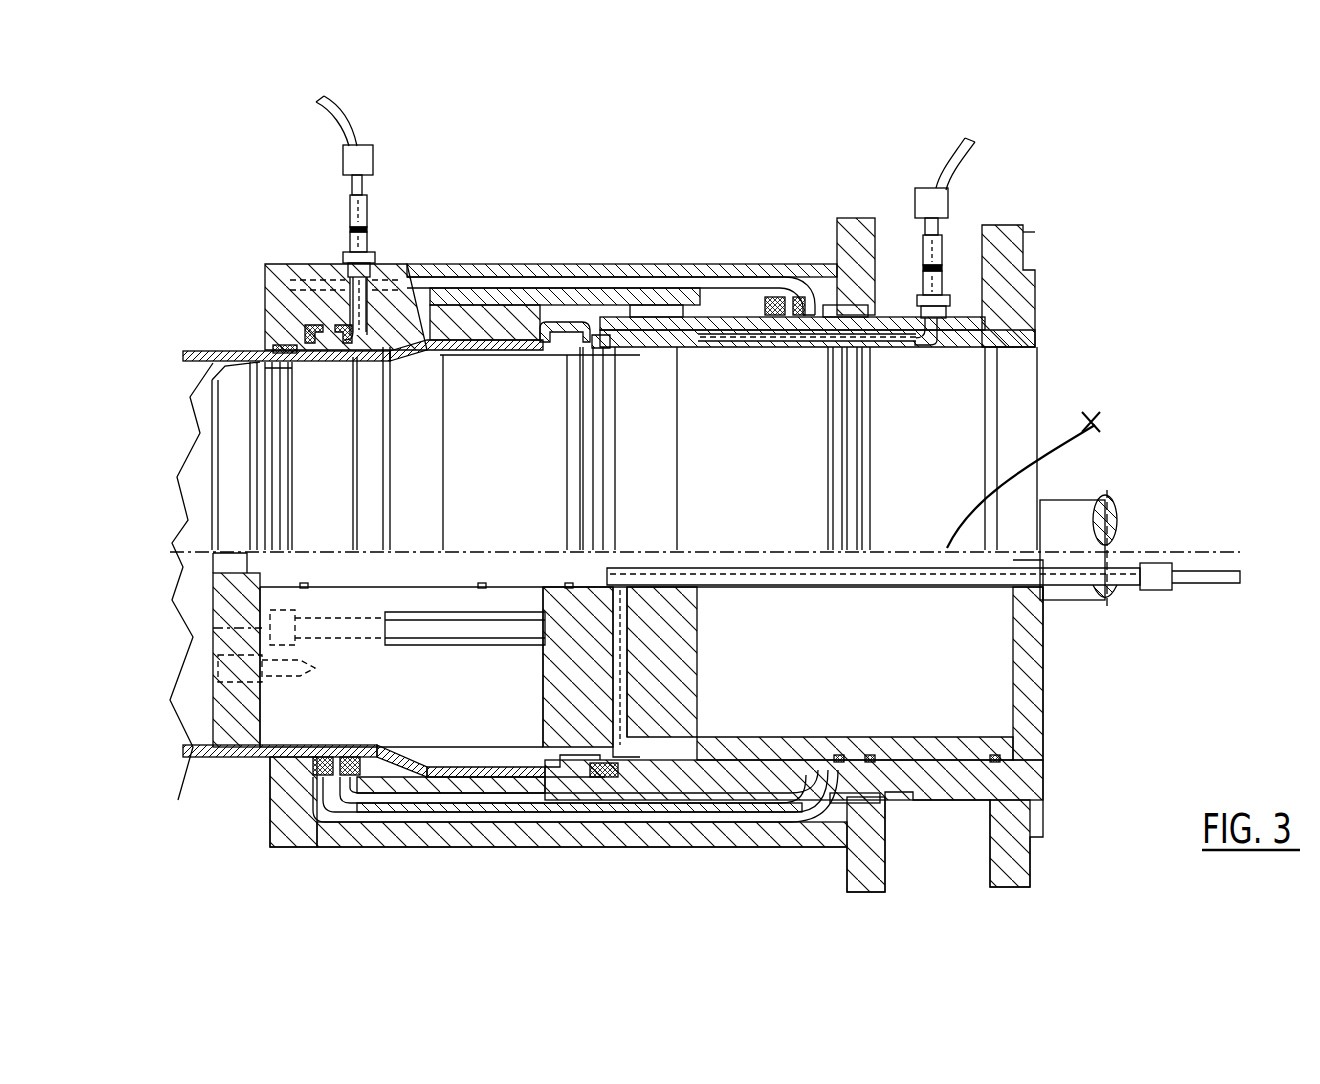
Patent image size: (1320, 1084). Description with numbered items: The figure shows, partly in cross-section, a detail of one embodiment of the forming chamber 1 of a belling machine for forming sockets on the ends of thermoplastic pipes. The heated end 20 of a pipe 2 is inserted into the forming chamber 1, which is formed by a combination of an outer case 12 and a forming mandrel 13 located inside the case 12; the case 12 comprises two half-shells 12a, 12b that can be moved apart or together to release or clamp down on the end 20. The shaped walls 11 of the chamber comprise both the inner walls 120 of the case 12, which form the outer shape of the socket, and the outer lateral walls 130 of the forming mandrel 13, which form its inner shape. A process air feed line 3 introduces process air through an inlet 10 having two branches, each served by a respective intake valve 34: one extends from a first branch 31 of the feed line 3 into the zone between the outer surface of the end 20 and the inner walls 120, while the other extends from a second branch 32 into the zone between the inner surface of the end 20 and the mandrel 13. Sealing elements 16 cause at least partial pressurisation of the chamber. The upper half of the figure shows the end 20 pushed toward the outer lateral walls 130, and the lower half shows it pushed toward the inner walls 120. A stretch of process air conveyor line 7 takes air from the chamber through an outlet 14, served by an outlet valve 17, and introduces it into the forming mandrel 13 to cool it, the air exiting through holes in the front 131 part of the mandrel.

The forming chamber 1 is at (462, 340).
The pipe 2 is at (198, 348).
The process air feed line 3 is at (362, 124).
The process air conveyor line 7 is at (960, 158).
The inlet 10 is at (367, 308).
The shaped walls 11 is at (512, 328).
The outer case 12 is at (690, 262).
The half-shell 12a is at (712, 285).
The half-shell 12b is at (690, 850).
The forming mandrel 13 is at (368, 428).
The outlet 14 is at (920, 345).
The sealing elements 16 is at (312, 768).
The outlet valve 17 is at (948, 205).
The heated end 20 is at (430, 362).
The first branch 31 is at (369, 187).
The second branch 32 is at (1130, 565).
The intake valve 34 is at (374, 158).
The inner walls 120 is at (483, 337).
The outer lateral walls 130 is at (403, 360).
The front part 131 is at (212, 495).